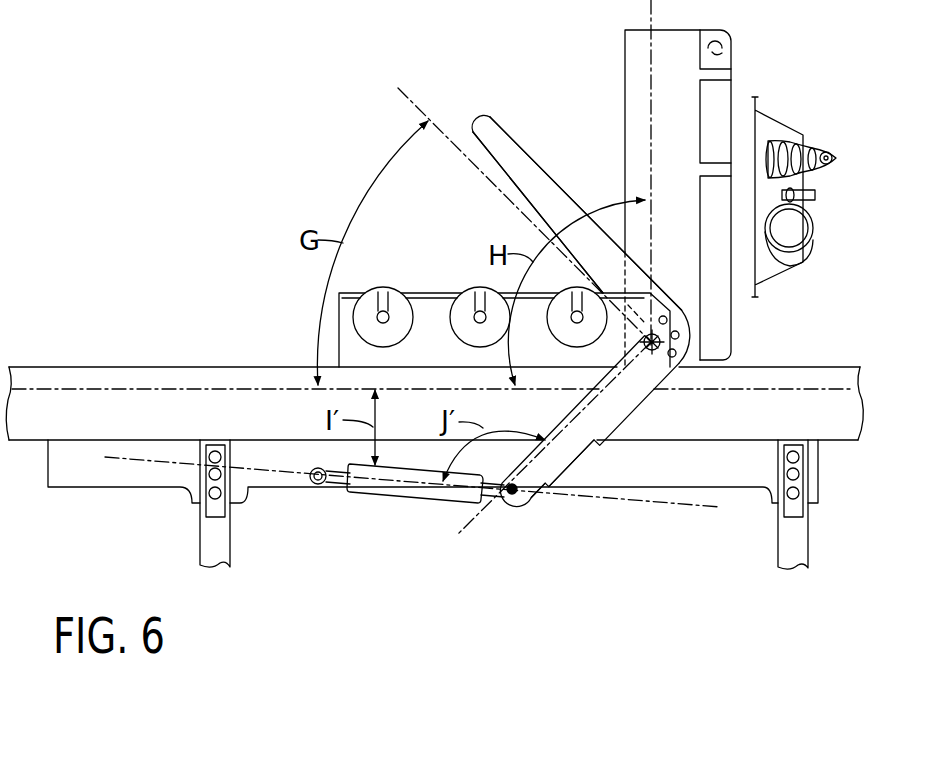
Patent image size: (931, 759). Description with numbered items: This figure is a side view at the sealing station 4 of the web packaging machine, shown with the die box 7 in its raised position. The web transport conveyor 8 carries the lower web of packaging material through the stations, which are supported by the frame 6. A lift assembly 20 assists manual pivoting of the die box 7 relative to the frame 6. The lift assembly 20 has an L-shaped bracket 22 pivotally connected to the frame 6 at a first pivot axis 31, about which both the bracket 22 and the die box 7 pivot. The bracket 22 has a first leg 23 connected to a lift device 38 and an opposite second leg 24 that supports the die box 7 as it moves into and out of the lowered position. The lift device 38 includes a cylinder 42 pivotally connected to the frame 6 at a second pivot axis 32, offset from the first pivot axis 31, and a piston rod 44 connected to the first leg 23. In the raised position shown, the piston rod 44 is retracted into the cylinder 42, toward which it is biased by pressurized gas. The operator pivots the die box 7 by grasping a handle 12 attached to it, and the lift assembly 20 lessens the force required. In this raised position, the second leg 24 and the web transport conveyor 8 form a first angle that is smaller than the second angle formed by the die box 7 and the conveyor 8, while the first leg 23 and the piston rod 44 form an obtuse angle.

The sealing station 4 is at (313, 142).
The frame 6 is at (198, 367).
The die box 7 is at (718, 102).
The web transport conveyor 8 is at (161, 388).
The handle 12 is at (735, 58).
The lift assembly 20 is at (700, 403).
The bracket 22 is at (617, 408).
The first leg 23 is at (567, 459).
The second leg 24 is at (513, 150).
The first pivot axis 31 is at (662, 338).
The second pivot axis 32 is at (318, 483).
The lift device 38 is at (441, 506).
The cylinder 42 is at (398, 488).
The piston rod 44 is at (488, 496).